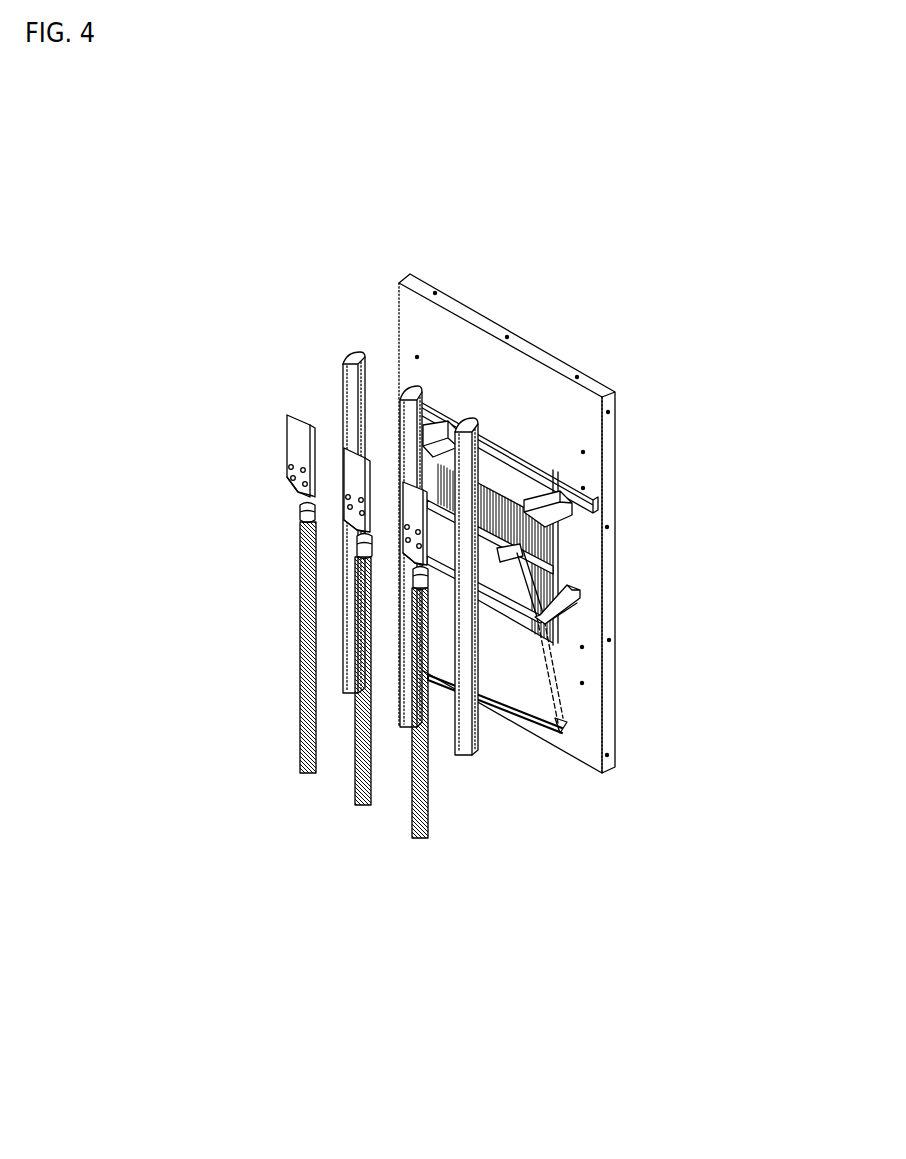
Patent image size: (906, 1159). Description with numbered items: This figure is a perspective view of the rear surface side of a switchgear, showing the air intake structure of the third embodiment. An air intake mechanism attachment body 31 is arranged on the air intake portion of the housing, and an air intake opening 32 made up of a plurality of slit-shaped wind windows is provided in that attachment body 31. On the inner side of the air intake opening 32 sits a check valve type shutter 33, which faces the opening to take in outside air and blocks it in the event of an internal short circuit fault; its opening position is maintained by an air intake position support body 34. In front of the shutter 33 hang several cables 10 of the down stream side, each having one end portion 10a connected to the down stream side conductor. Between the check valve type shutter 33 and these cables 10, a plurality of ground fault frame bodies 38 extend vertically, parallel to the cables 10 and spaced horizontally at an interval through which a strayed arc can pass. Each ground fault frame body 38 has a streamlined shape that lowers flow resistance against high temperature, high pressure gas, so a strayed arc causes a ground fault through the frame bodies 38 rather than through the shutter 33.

The cable 10 is at (300, 678).
The one end portion of the cable 10a is at (297, 442).
The air intake mechanism attachment body 31 is at (615, 453).
The air intake opening 32 is at (553, 543).
The check valve type shutter 33 is at (527, 675).
The air intake position support body 34 is at (558, 608).
The ground fault frame body 38 is at (410, 395).